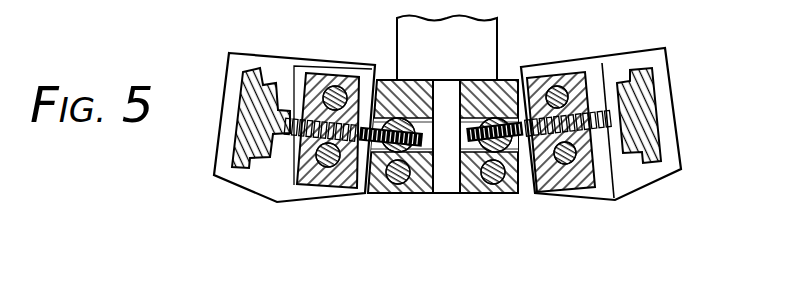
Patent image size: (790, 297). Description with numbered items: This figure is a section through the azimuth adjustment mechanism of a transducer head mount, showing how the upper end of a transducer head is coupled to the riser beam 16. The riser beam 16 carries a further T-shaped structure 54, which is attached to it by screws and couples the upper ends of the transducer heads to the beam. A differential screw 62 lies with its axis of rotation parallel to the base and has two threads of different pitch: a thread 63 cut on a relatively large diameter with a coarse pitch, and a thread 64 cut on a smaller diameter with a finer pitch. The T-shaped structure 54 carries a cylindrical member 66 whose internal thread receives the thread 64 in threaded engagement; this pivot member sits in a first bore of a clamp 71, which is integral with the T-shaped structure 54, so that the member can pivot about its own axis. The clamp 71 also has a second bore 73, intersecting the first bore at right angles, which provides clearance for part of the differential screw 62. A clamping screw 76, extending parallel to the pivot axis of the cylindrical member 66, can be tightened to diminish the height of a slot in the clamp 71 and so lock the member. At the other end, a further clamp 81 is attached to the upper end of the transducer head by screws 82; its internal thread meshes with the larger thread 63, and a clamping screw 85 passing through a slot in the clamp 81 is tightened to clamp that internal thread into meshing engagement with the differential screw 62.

The riser beam 16 is at (498, 19).
The T-shaped structure 54 is at (450, 199).
The differential screw 62 is at (242, 78).
The thread 63 is at (287, 126).
The thread 64 is at (406, 125).
The cylindrical member 66 is at (380, 76).
The clamp 71 is at (372, 196).
The second bore 73 is at (446, 110).
The clamping screw 76 is at (403, 181).
The further clamp 81 is at (320, 79).
The screws 82 is at (335, 80).
The clamping screw 85 is at (327, 163).